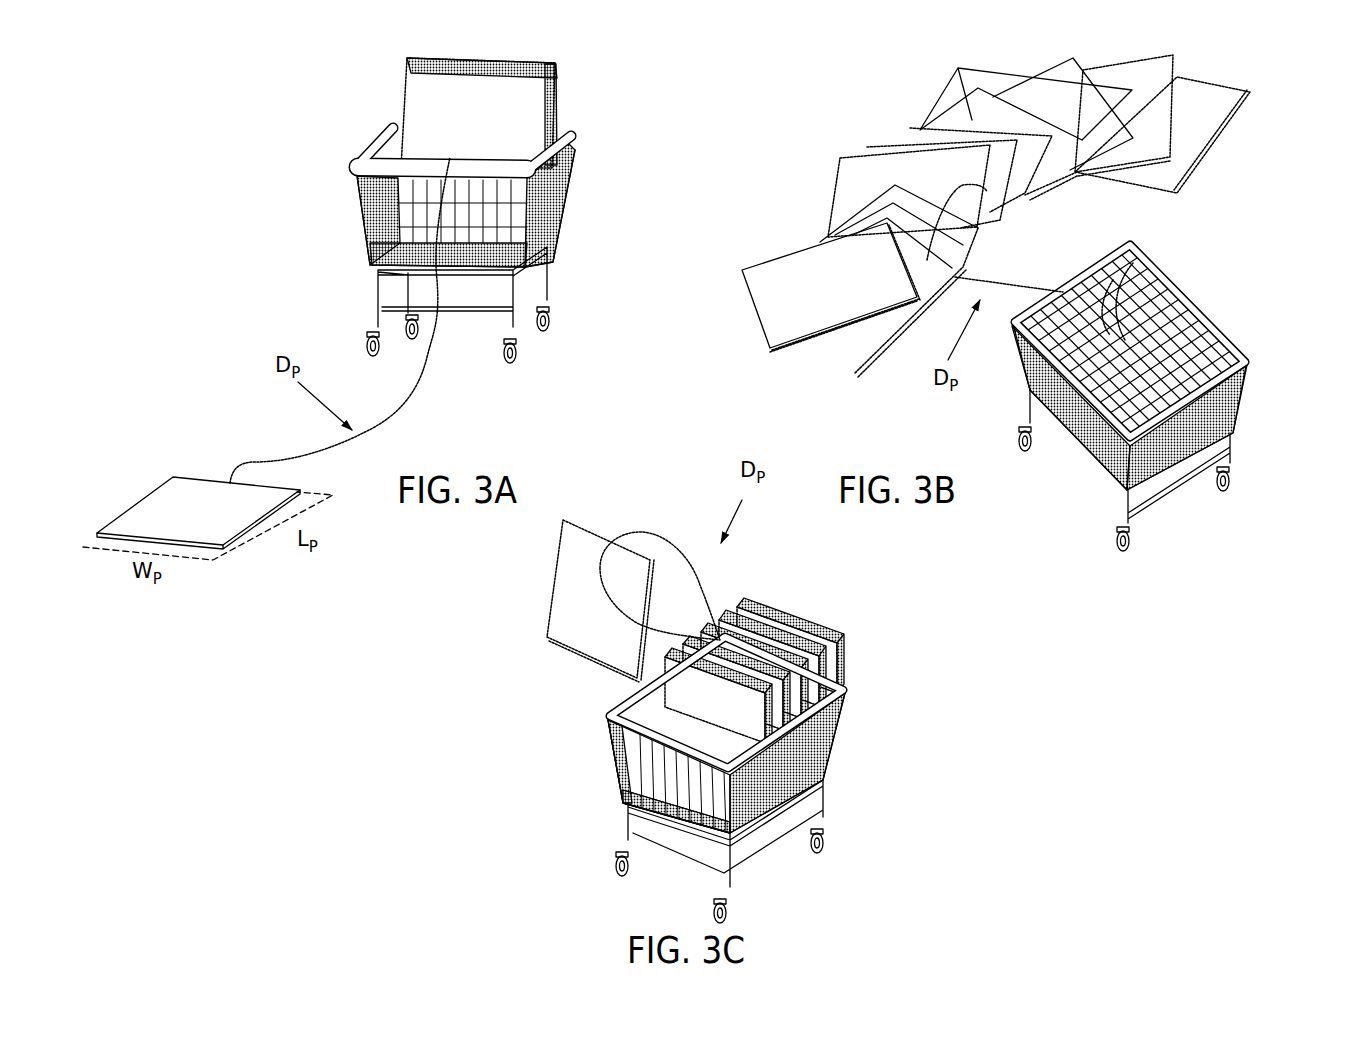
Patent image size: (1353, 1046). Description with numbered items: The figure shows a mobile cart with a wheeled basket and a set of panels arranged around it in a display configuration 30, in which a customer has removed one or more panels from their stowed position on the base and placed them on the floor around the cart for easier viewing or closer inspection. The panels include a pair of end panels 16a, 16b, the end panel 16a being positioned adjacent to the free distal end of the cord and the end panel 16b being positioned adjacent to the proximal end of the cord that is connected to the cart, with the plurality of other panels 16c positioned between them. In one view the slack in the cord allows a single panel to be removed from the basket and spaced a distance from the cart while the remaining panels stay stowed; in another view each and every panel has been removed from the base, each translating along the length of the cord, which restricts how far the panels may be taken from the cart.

In FIG. 3A, the display configuration 30 is at (270, 192).
In FIG. 3B, the display configuration 30 is at (785, 137).
In FIG. 3C, the display configuration 30 is at (522, 712).
In FIG. 3A, the end panel 16a is at (177, 493).
In FIG. 3B, the end panel 16a is at (1188, 115).
In FIG. 3B, the end panel 16b is at (797, 277).
In FIG. 3B, the other panels 16c is at (1057, 102).